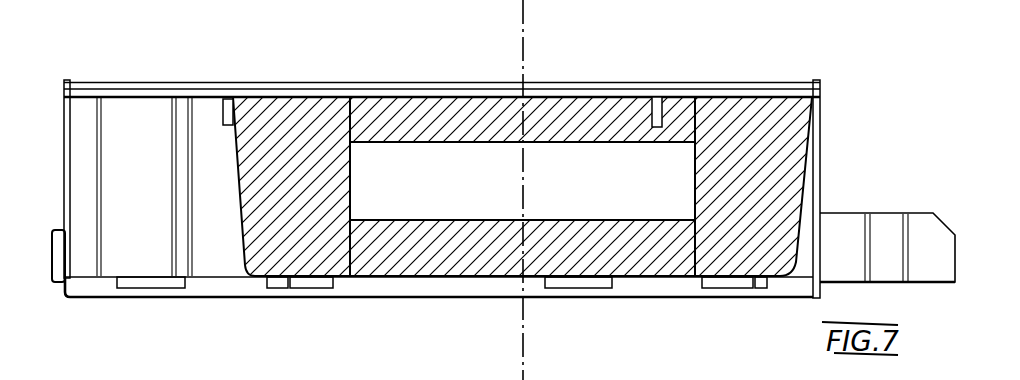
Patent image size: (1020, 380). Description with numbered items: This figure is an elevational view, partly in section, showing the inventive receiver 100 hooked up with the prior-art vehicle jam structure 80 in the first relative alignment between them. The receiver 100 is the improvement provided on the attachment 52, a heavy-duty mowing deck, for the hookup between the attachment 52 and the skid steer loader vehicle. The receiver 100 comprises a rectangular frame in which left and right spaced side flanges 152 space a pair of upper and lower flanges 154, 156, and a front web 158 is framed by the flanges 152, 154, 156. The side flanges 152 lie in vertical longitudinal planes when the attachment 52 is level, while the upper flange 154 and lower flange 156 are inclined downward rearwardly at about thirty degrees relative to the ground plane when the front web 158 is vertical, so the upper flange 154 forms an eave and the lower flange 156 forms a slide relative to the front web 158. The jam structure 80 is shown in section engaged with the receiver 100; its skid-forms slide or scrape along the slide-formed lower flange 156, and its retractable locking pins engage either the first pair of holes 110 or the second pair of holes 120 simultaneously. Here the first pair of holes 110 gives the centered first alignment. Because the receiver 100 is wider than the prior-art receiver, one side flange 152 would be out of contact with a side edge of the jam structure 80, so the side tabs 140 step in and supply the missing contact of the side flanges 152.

The attachment 52 is at (918, 222).
The jam structure 80 is at (432, 118).
The receiver 100 is at (193, 82).
The first pair of holes 110 is at (293, 285).
The second pair of holes 120 is at (143, 286).
The side tab 140 is at (223, 97).
The side flange 152 is at (820, 118).
The upper flange 154 is at (328, 80).
The lower flange 156 is at (372, 297).
The front web 158 is at (152, 108).